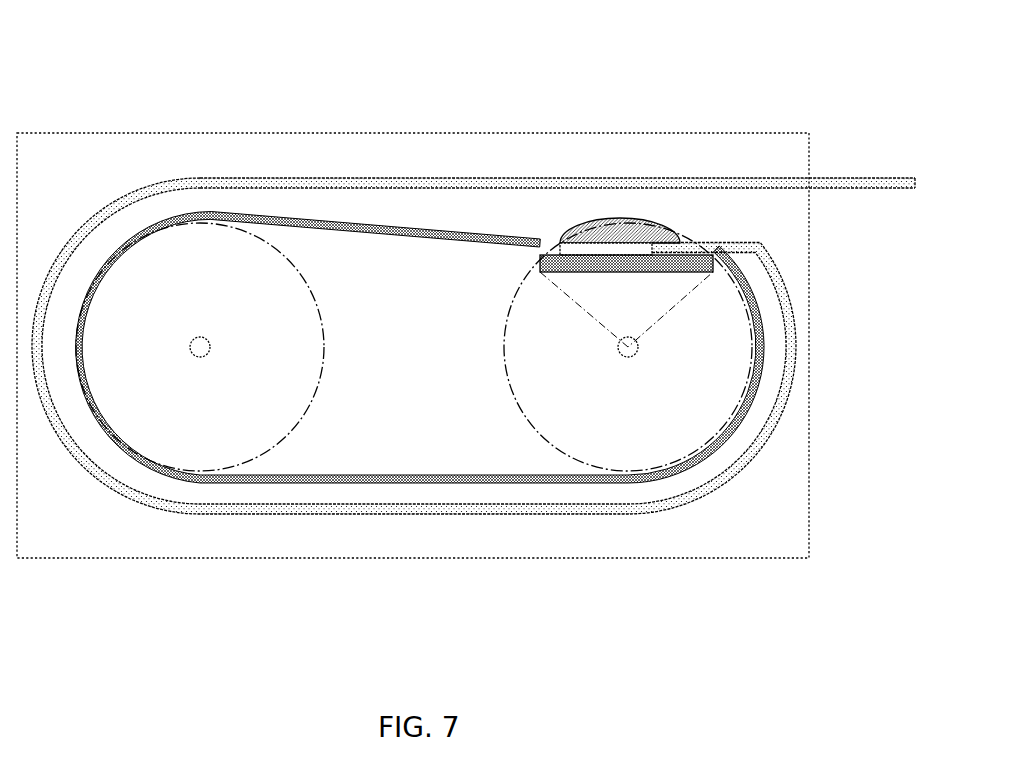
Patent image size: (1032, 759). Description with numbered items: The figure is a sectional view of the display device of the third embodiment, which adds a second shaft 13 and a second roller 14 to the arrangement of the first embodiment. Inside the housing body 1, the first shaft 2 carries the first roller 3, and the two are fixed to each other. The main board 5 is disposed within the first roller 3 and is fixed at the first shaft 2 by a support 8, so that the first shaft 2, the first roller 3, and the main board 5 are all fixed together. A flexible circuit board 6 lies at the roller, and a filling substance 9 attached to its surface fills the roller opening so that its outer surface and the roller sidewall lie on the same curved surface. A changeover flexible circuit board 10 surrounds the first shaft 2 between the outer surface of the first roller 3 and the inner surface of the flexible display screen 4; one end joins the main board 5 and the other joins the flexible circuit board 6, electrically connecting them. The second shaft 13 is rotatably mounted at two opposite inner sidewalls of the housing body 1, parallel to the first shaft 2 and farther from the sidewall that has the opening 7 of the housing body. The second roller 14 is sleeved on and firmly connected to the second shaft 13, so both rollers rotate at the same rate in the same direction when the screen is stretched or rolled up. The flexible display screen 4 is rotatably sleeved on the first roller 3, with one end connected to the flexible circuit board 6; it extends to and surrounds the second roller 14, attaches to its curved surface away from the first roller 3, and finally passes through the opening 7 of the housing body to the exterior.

The housing body 1 is at (665, 133).
The first shaft 2 is at (623, 350).
The first roller 3 is at (698, 408).
The flexible display screen 4 is at (793, 347).
The main board 5 is at (583, 262).
The flexible circuit board 6 is at (618, 248).
The opening of the housing body 7 is at (810, 197).
The support 8 is at (570, 300).
The filling substance 9 is at (645, 230).
The changeover flexible circuit board 10 is at (730, 432).
The second shaft 13 is at (196, 338).
The second roller 14 is at (233, 287).